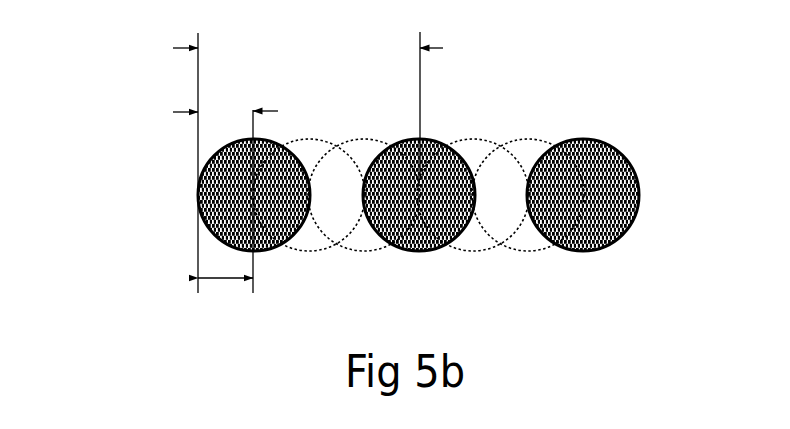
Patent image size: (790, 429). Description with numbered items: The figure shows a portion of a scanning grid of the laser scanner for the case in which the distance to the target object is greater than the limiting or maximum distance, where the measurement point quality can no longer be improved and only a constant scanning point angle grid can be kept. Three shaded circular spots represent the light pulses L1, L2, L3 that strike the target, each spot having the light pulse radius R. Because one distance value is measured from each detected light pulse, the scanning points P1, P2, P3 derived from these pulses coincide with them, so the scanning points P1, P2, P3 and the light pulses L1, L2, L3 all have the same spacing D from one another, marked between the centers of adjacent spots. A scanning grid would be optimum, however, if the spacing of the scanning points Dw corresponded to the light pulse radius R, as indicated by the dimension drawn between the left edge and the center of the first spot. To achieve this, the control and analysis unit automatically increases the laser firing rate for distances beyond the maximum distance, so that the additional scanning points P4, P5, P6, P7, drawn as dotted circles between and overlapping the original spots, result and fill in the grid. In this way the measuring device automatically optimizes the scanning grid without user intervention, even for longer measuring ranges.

The scanning point P1 is at (218, 193).
The scanning point P2 is at (390, 178).
The scanning point P3 is at (600, 178).
The light pulse L1 is at (185, 195).
The light pulse L2 is at (443, 169).
The light pulse L3 is at (569, 151).
The additional scanning point P4 is at (307, 240).
The additional scanning point P5 is at (373, 245).
The additional scanning point P6 is at (467, 240).
The additional scanning point P7 is at (525, 242).
The light pulse radius R is at (277, 111).
The spacing of the light pulses D is at (430, 47).
The spacing of the scanning points Dw is at (223, 278).